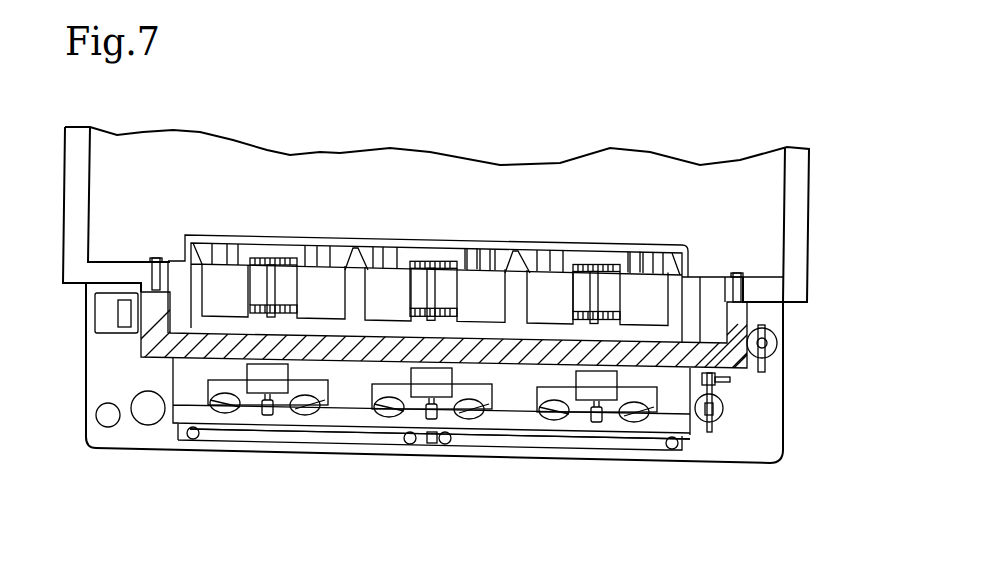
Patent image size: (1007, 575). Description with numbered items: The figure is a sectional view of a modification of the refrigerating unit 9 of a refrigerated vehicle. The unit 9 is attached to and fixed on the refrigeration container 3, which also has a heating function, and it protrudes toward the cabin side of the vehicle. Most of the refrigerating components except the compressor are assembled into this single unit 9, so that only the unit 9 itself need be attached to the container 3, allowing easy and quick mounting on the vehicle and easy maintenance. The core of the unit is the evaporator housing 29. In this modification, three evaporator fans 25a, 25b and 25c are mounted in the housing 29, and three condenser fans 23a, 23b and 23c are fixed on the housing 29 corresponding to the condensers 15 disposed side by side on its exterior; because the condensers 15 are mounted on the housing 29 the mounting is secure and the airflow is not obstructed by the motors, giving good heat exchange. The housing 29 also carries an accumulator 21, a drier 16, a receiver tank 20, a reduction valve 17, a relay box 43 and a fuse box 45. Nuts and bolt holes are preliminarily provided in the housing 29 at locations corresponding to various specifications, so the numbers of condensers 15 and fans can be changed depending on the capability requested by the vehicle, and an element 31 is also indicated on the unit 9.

The refrigeration container 3 is at (78, 189).
The refrigerating unit 9 is at (72, 441).
The condenser 15 is at (223, 440).
The drier 16 is at (108, 427).
The reduction valve 17 is at (710, 423).
The receiver tank 20 is at (148, 425).
The accumulator 21 is at (783, 342).
The condenser fan 23a is at (277, 392).
The condenser fan 23b is at (440, 392).
The condenser fan 23c is at (603, 393).
The evaporator fan 25a is at (228, 280).
The evaporator fan 25b is at (392, 280).
The evaporator fan 25c is at (553, 280).
The evaporator housing 29 is at (360, 363).
The side wall 31 is at (800, 413).
The relay box 43 is at (115, 318).
The fuse box 45 is at (95, 300).